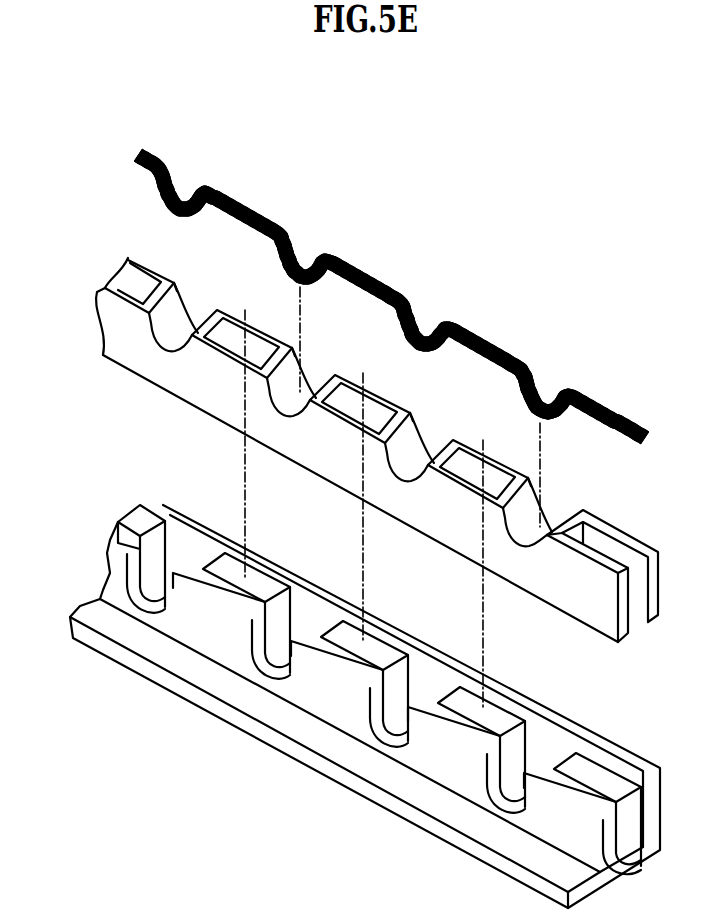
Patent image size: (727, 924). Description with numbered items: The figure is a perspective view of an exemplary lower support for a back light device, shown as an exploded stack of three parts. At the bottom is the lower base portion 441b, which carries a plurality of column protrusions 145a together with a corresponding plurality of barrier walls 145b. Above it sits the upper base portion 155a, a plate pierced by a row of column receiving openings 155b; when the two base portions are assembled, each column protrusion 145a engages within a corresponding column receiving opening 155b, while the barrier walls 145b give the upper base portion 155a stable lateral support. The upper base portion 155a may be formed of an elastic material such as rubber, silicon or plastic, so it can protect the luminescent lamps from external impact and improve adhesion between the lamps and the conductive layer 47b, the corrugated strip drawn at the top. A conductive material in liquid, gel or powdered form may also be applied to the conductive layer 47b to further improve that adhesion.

The conductive layer 47b is at (378, 277).
The upper base portion 155a is at (135, 357).
The column receiving openings 155b is at (383, 418).
The lower base portion 441b is at (95, 600).
The column protrusions 145a is at (608, 773).
The barrier walls 145b is at (450, 760).